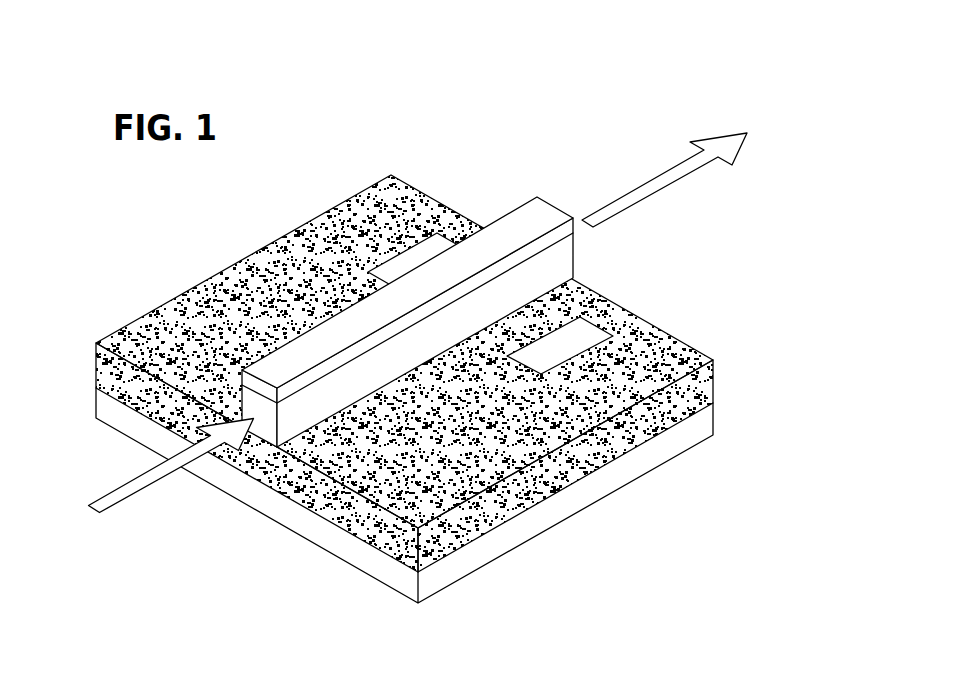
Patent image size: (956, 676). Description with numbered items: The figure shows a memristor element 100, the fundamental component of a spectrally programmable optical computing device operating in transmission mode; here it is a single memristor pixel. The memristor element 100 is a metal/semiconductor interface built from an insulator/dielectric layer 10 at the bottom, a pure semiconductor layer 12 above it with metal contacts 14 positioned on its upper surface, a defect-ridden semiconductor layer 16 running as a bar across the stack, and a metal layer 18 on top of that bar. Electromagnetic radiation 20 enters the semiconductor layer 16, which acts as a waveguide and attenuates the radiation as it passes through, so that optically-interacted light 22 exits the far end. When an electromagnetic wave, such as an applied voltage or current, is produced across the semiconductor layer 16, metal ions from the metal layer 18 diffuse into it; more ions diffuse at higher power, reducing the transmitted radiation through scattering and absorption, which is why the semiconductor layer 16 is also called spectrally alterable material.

The memristor element 100 is at (130, 250).
The insulator/dielectric layer 10 is at (572, 515).
The pure semiconductor layer 12 is at (715, 386).
The metal contacts 14 is at (407, 258).
The semiconductor layer 16 is at (578, 258).
The metal layer 18 is at (510, 230).
The electromagnetic radiation 20 is at (122, 490).
The optically-interacted light 22 is at (653, 185).